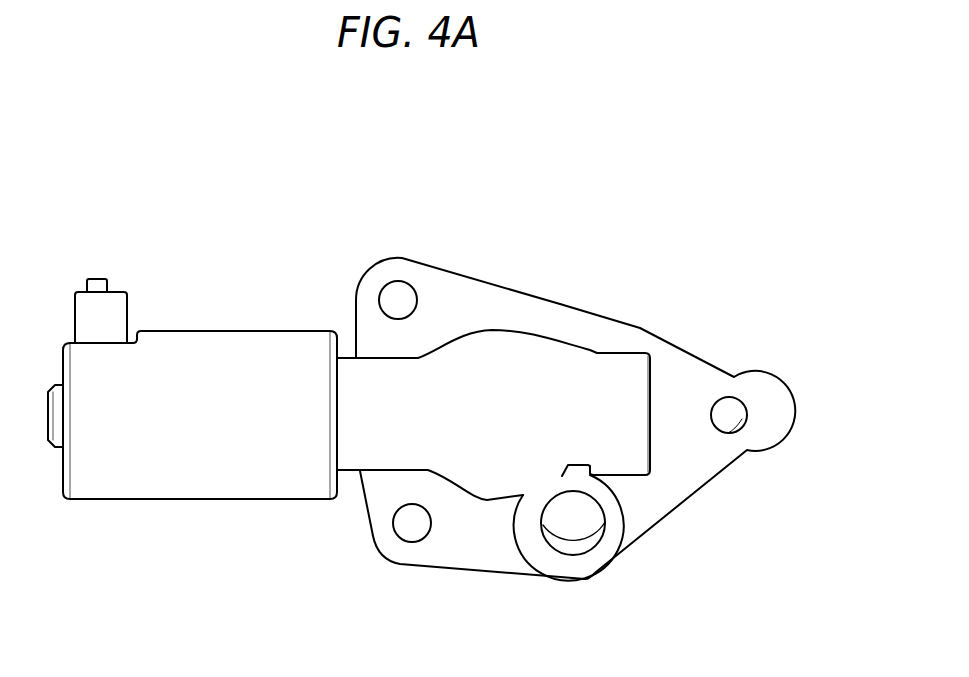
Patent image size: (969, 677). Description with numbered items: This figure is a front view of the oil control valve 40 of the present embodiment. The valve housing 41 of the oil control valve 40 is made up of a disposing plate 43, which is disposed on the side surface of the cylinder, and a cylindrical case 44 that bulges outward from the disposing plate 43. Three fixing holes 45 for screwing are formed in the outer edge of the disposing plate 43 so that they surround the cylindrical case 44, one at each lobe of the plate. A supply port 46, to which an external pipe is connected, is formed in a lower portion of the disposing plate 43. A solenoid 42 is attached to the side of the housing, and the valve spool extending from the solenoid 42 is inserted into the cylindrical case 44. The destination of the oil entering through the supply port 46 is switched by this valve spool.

The oil control valve 40 is at (633, 166).
The valve housing 41 is at (541, 327).
The solenoid 42 is at (182, 490).
The disposing plate 43 is at (626, 323).
The cylindrical case 44 is at (492, 448).
The fixing holes 45 is at (394, 292).
The supply port 46 is at (566, 545).